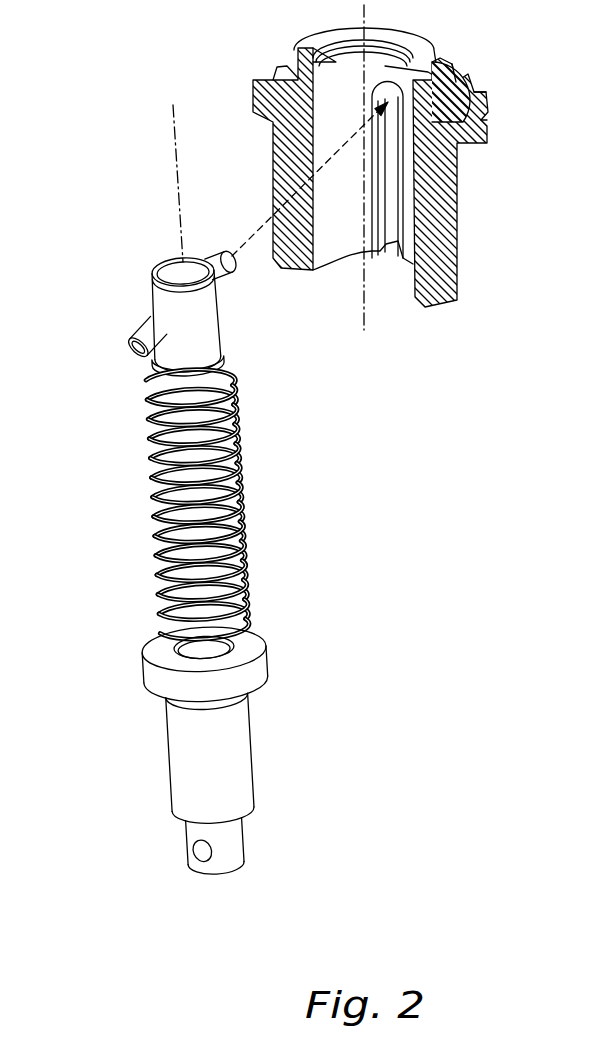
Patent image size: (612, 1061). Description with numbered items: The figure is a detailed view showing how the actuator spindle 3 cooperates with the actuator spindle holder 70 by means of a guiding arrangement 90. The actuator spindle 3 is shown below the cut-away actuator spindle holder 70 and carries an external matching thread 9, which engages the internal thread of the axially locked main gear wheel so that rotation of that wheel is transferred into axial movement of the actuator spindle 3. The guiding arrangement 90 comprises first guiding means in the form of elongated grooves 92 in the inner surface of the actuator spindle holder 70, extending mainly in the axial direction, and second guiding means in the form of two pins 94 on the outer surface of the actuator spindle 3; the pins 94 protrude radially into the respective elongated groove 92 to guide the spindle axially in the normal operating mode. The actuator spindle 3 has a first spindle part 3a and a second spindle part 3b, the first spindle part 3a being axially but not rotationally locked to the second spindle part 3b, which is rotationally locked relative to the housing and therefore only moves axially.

The actuator spindle 3 is at (112, 585).
The first spindle part 3a is at (214, 447).
The second spindle part 3b is at (230, 768).
The matching thread 9 is at (158, 483).
The actuator spindle holder 70 is at (457, 241).
The guiding arrangement 90 is at (306, 199).
The elongated groove 92 is at (395, 220).
The pin 94 is at (157, 328).